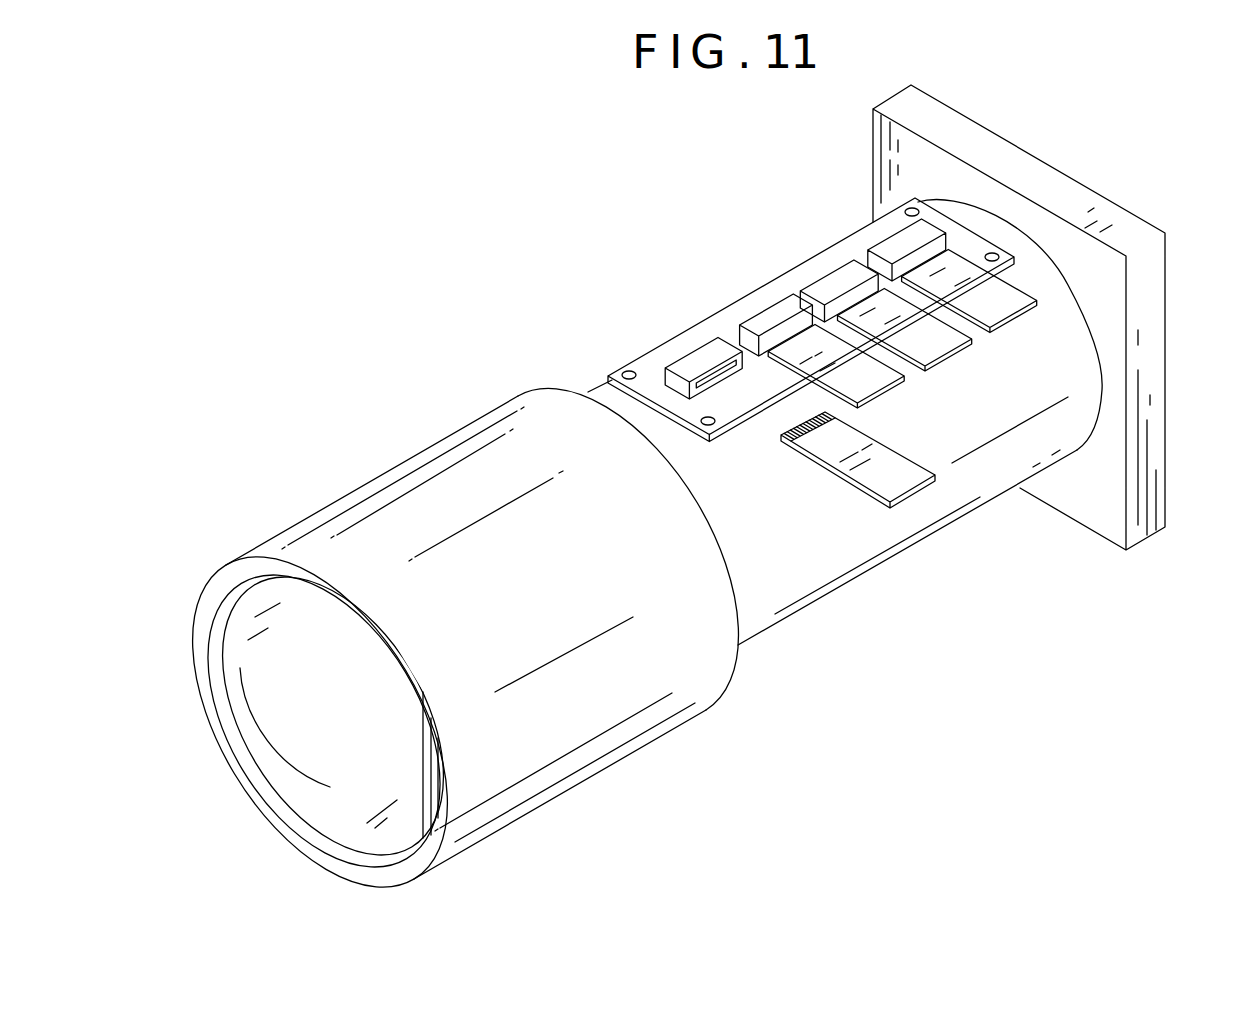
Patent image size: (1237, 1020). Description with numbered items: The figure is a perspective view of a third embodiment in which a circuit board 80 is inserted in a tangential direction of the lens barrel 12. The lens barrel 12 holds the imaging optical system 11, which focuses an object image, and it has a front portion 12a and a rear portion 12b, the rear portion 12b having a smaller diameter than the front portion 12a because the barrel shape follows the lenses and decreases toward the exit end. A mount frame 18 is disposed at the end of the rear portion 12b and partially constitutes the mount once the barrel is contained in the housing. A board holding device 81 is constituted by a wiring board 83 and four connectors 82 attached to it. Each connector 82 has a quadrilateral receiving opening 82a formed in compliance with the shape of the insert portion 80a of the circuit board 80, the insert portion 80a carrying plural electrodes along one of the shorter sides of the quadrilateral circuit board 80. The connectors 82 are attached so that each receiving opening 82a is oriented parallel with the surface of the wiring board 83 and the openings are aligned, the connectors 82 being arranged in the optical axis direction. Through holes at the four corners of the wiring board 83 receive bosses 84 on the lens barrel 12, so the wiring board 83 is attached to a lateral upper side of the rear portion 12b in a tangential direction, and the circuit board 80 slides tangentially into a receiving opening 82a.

The imaging optical system 11 is at (272, 750).
The lens barrel 12 is at (608, 629).
The front portion 12a is at (388, 513).
The rear portion 12b is at (793, 592).
The mount frame 18 is at (1013, 160).
The circuit board 80 is at (884, 510).
The insert portion 80a is at (794, 440).
The board holding device 81 is at (790, 246).
The connector 82 is at (703, 387).
The receiving opening 82a is at (711, 384).
The wiring board 83 is at (752, 303).
The boss 84 is at (913, 207).